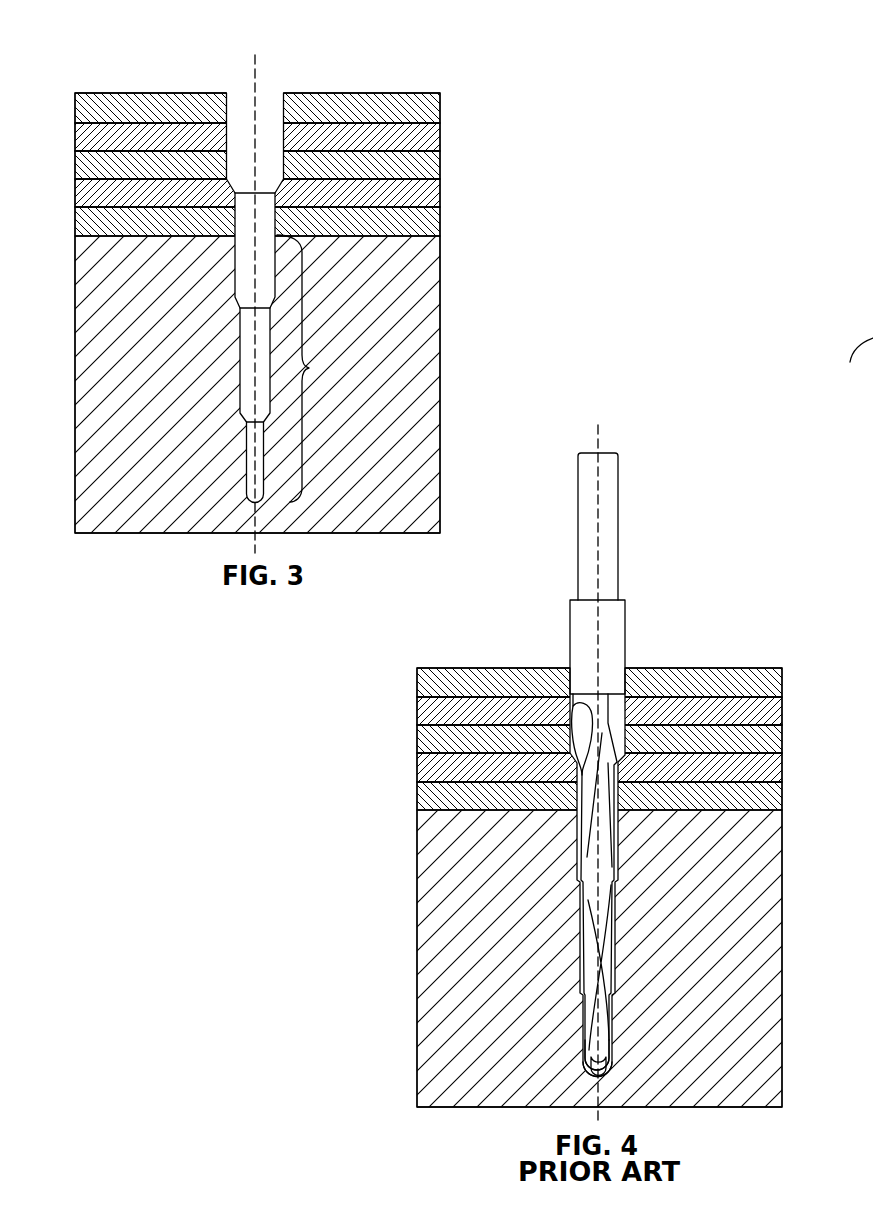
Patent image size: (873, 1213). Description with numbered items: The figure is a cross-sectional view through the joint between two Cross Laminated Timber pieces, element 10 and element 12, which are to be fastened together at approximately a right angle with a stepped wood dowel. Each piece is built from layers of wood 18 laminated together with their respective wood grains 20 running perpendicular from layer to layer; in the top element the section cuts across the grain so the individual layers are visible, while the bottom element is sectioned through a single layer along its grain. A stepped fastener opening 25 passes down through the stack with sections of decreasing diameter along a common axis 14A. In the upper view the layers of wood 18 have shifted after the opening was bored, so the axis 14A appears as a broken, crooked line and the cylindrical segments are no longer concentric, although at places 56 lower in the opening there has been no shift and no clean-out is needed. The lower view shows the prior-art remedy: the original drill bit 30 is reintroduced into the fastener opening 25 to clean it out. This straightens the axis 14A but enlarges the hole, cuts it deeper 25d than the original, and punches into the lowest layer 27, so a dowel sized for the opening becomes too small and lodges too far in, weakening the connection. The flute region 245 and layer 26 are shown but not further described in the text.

In FIG. 3, the element 10 is at (259, 148).
In FIG. 4, the element 10 is at (600, 715).
In FIG. 3, the element 12 is at (432, 327).
In FIG. 4, the element 12 is at (432, 917).
In FIG. 3, the axis of the opening 14A is at (257, 63).
In FIG. 4, the axis of the opening 14A is at (598, 435).
In FIG. 3, the layers of wood 18 is at (75, 110).
In FIG. 4, the layers of wood 18 is at (777, 710).
In FIG. 3, the wood grains 20 is at (125, 137).
In FIG. 4, the wood grains 20 is at (599, 701).
In FIG. 3, the opening 25 is at (267, 110).
In FIG. 4, the opening 25 is at (595, 795).
In FIG. 4, the bottom layer 26 is at (780, 806).
In FIG. 4, the lowest layer 27 is at (587, 1075).
In FIG. 4, the original drill bit 30 is at (617, 630).
In FIG. 3, the places 56 is at (309, 368).
In FIG. 4, the drill flute / cutting edge 245 is at (626, 763).
In FIG. 4, the deeper hole 25d is at (608, 1083).